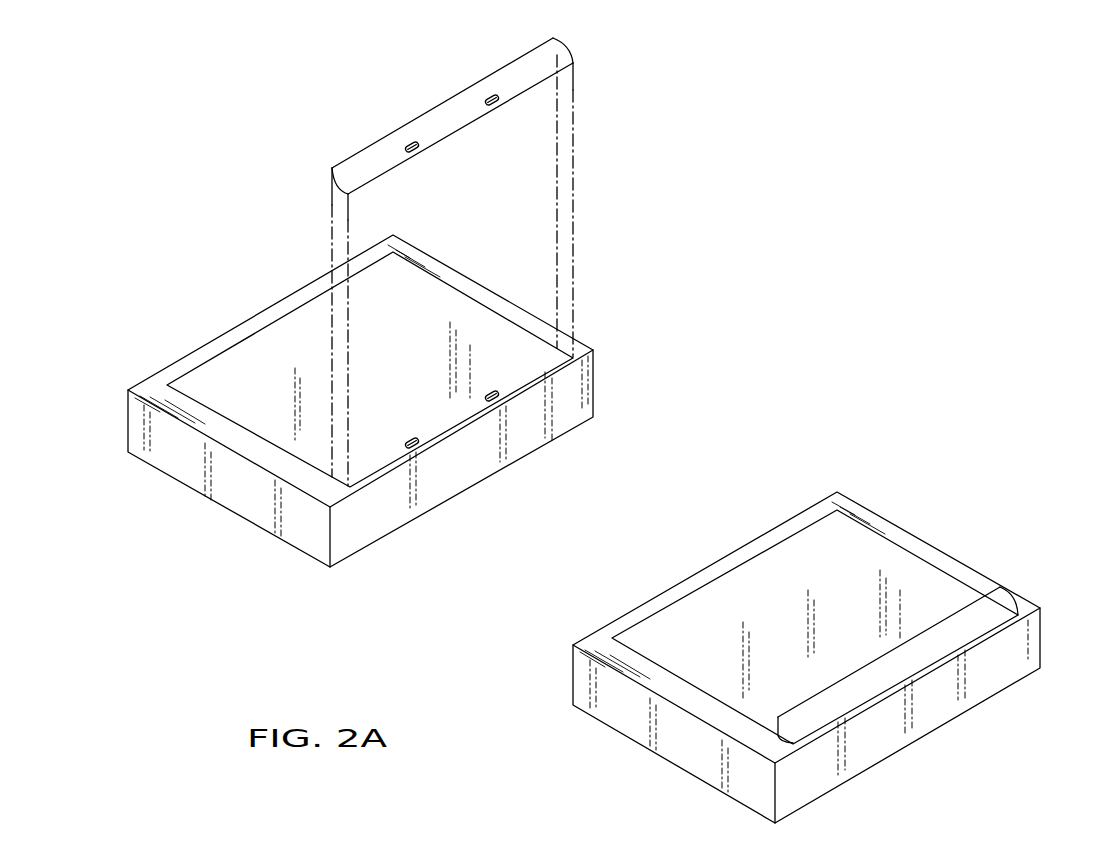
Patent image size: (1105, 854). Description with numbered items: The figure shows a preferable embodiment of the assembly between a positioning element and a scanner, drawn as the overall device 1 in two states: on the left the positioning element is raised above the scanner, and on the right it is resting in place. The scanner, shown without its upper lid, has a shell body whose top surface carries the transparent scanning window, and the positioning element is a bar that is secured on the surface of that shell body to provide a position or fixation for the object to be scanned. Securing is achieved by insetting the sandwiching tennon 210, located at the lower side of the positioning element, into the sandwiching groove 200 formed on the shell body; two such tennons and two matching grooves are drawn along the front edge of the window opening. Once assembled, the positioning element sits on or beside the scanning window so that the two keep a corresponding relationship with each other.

The packaging box assembly 1 is at (580, 168).
The sandwiching groove 200 is at (500, 396).
The sandwiching tennon 210 is at (498, 105).